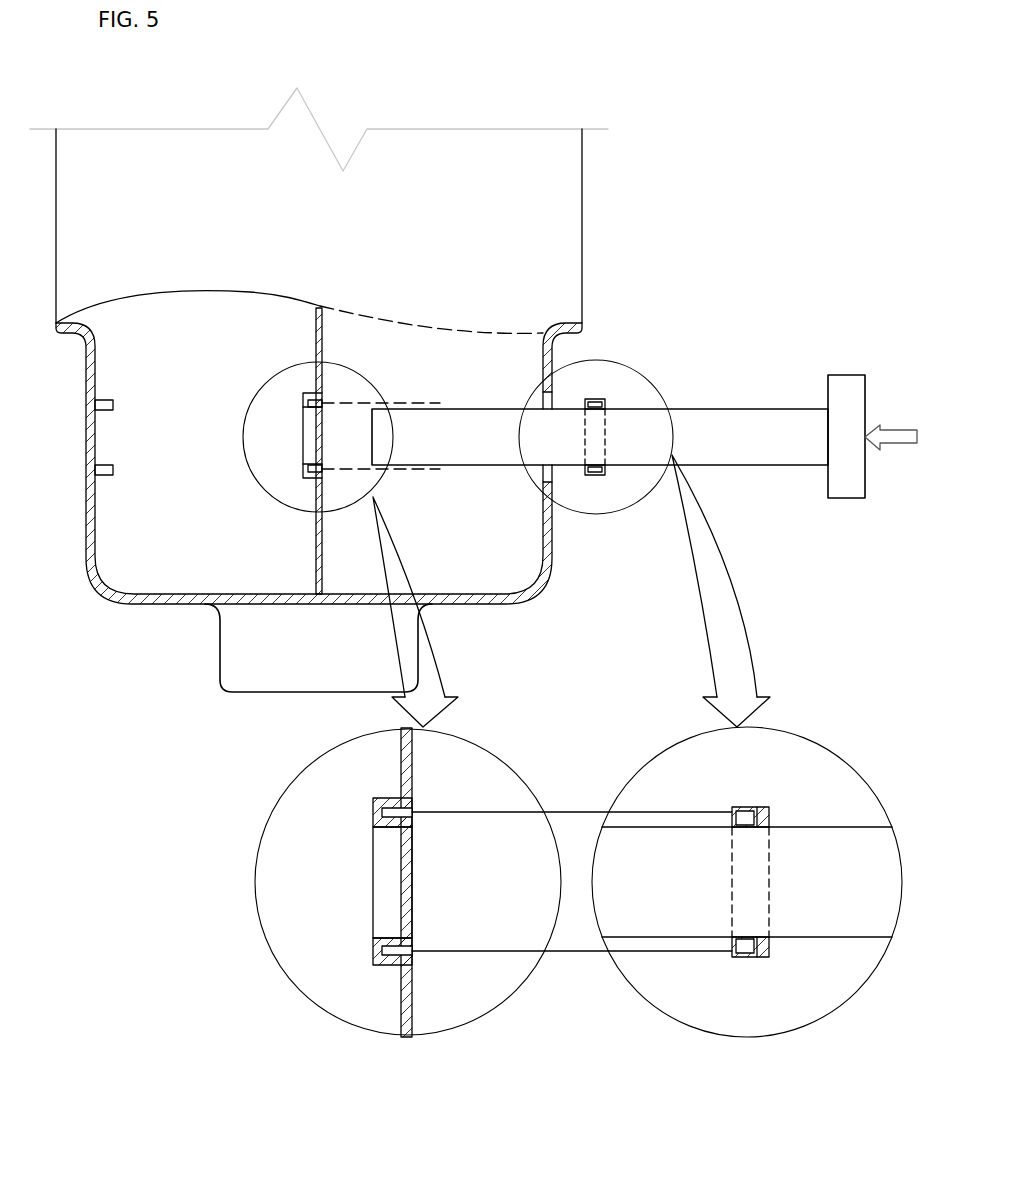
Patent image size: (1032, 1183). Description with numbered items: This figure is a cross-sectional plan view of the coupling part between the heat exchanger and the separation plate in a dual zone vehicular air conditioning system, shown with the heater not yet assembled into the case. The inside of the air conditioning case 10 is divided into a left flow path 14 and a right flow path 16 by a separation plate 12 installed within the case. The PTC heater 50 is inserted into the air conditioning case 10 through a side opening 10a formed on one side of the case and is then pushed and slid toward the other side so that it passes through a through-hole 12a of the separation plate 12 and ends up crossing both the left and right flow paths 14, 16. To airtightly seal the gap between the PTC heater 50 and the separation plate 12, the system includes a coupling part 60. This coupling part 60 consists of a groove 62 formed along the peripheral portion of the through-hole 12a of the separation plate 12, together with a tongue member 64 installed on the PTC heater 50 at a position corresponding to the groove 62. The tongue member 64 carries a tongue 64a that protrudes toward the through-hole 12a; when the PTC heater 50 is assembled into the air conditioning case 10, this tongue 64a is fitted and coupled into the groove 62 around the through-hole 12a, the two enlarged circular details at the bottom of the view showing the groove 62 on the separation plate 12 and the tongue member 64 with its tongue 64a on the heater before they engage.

The air conditioning case 10 is at (567, 185).
The side opening 10a is at (543, 474).
The separation plate 12 is at (319, 310).
The through-hole 12a is at (300, 410).
The left flow path 14 is at (192, 375).
The right flow path 16 is at (446, 375).
The PTC heater 50 is at (773, 405).
The coupling part 60 is at (662, 278).
The groove 62 is at (385, 403).
The tongue member 64 is at (605, 399).
The tongue 64a is at (590, 399).